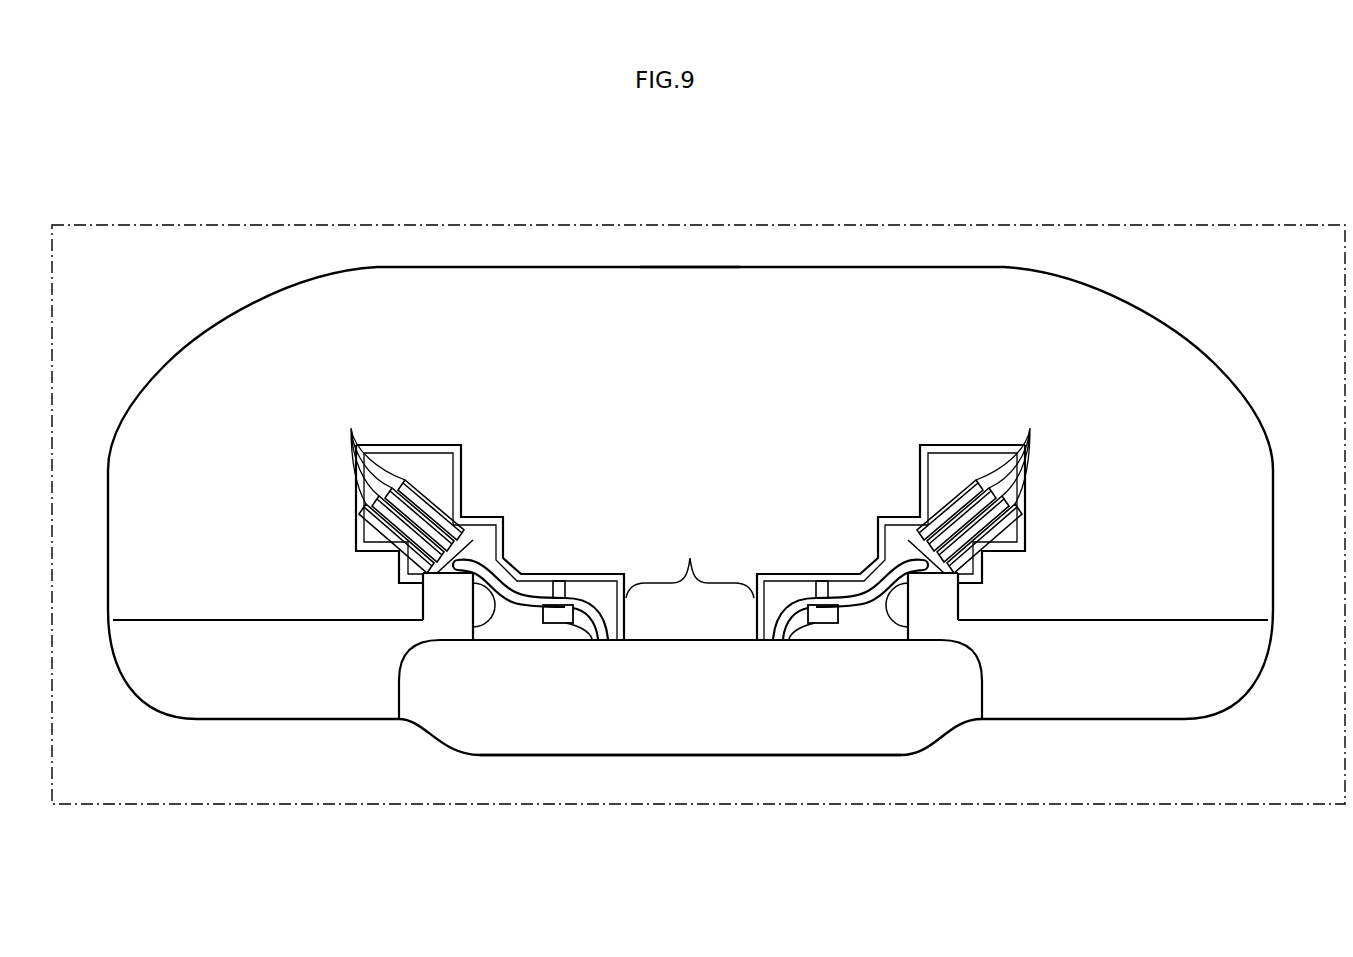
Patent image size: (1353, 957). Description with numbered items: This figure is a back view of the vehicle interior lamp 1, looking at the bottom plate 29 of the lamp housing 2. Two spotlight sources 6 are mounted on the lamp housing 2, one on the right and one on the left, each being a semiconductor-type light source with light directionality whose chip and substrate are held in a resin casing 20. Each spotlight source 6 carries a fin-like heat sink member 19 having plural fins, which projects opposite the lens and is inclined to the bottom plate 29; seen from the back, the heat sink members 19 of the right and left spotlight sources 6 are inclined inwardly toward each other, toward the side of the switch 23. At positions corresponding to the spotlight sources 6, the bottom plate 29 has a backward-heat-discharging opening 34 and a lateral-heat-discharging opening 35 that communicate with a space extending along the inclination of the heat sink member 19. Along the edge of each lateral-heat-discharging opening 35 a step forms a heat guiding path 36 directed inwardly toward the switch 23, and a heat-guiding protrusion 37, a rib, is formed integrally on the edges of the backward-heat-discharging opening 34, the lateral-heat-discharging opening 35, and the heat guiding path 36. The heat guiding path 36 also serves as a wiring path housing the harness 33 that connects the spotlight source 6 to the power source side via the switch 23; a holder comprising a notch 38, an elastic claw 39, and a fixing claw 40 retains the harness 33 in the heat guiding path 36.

The vehicle interior lamp 1 is at (1024, 212).
The lamp housing 2 is at (815, 262).
The spotlight source 6 is at (428, 476).
The fin-like heat sink member 19 is at (690, 444).
The casing 20 is at (453, 572).
The switch 23 is at (533, 758).
The bottom plate 29 is at (691, 293).
The harness 33 is at (530, 615).
The backward-heat-discharging opening 34 is at (442, 464).
The lateral-heat-discharging opening 35 is at (481, 530).
The heat guiding path 36 is at (507, 627).
The heat-guiding protrusion 37 is at (463, 470).
The notch 38 is at (488, 615).
The elastic claw 39 is at (566, 624).
The fixing claw 40 is at (563, 588).